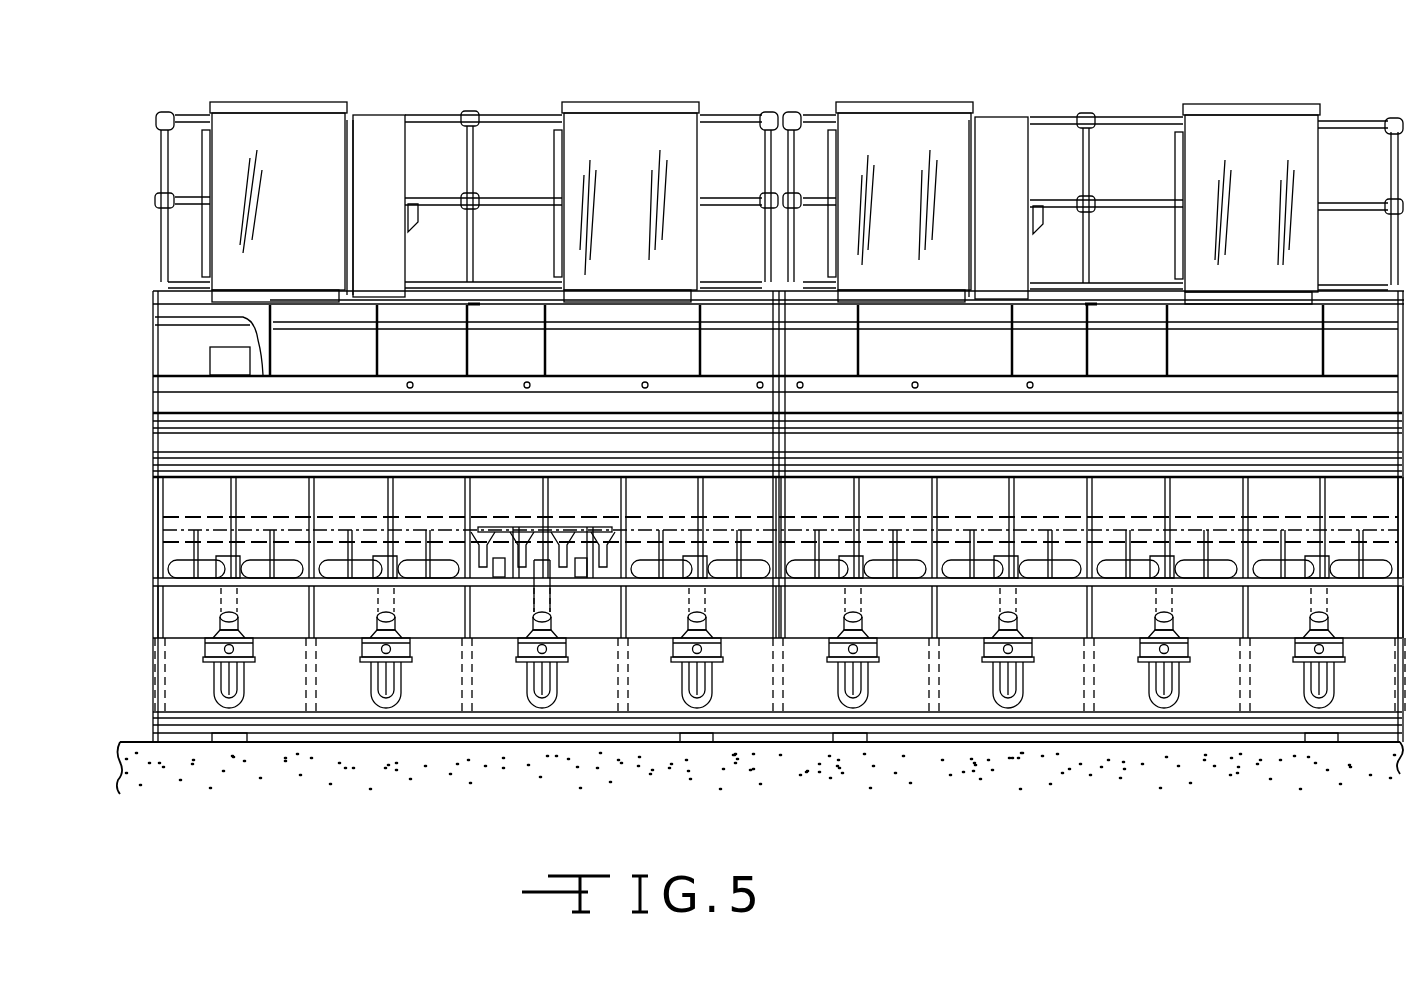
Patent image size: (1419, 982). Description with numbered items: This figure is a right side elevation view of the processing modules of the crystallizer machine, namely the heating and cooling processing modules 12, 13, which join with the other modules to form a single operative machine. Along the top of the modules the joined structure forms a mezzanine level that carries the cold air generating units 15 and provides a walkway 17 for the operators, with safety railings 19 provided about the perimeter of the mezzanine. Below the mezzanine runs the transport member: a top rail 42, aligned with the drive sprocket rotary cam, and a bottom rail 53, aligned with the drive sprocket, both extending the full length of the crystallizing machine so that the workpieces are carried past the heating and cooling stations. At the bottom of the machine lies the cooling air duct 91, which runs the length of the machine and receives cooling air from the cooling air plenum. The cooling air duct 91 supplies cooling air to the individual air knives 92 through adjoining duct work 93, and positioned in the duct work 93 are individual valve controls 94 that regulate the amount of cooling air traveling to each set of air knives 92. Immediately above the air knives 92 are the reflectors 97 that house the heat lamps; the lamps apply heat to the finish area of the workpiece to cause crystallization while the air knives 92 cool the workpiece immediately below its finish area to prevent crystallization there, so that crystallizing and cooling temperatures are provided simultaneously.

The heating and cooling processing module 12 is at (423, 752).
The heating and cooling processing module 13 is at (1060, 751).
The cold air generating unit 15 is at (283, 128).
The walkway 17 is at (728, 288).
The safety railing 19 is at (1347, 118).
The top rail 42 is at (1290, 428).
The bottom rail 53 is at (1353, 462).
The cooling air duct 91 is at (1363, 717).
The air knife 92 is at (515, 572).
The duct work 93 is at (562, 612).
The valve control 94 is at (720, 654).
The reflector 97 is at (486, 520).